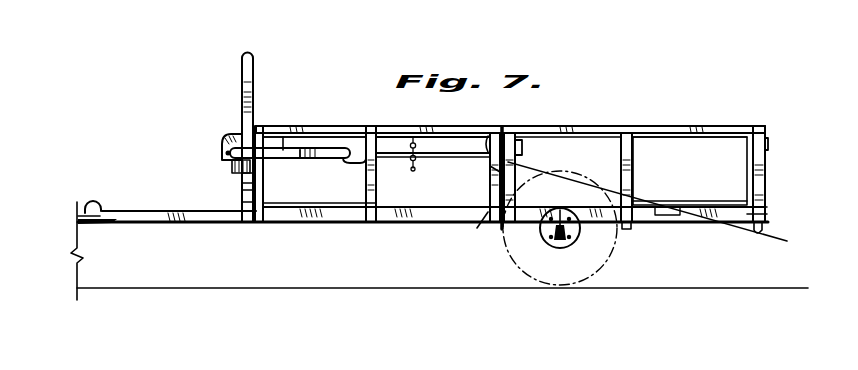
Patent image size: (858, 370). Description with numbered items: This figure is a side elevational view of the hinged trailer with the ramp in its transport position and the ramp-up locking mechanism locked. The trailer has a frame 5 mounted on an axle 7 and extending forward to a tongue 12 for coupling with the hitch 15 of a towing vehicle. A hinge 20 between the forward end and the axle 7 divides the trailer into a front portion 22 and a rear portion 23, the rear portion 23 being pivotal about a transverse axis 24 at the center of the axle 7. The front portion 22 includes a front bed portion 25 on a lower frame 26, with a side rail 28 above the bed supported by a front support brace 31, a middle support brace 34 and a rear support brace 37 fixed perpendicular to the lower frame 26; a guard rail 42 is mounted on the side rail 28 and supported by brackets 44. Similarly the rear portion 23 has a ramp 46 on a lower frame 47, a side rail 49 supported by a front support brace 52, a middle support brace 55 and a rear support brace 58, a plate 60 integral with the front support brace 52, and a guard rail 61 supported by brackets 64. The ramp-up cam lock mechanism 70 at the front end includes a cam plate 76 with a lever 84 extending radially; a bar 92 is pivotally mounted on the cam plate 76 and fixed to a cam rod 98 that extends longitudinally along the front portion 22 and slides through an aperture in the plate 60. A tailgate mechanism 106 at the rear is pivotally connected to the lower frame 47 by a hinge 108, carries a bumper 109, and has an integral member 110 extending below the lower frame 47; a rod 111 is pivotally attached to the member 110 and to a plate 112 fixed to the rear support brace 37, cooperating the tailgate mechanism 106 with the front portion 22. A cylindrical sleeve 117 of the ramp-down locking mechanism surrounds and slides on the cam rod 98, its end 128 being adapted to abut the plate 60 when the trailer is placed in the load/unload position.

The frame 5 is at (322, 218).
The axle 7 is at (570, 240).
The tongue 12 is at (168, 218).
The hitch 15 is at (85, 222).
The hinge 20 is at (503, 226).
The front portion 22 is at (372, 118).
The rear portion 23 is at (606, 106).
The transverse axis 24 is at (560, 241).
The front bed portion 25 is at (303, 208).
The lower frame 26 is at (270, 218).
The side rail 28 is at (279, 136).
The front support brace 31 is at (258, 223).
The middle support brace 34 is at (376, 222).
The rear support brace 37 is at (488, 212).
The guard rail 42 is at (400, 130).
The brackets 44 is at (247, 199).
The ramp 46 is at (692, 205).
The lower frame 47 is at (661, 218).
The side rail 49 is at (582, 137).
The front support brace 52 is at (510, 162).
The middle support brace 55 is at (623, 224).
The rear support brace 58 is at (748, 164).
The plate 60 is at (516, 150).
The guard rail 61 is at (662, 128).
The brackets 64 is at (633, 154).
The ramp-up cam lock mechanism 70 is at (211, 139).
The cam plate 76 is at (232, 165).
The lever 84 is at (244, 80).
The bar 92 is at (289, 149).
The cam rod 98 is at (343, 159).
The tailgate mechanism 106 is at (768, 185).
The hinge 108 is at (768, 212).
The bumper 109 is at (770, 144).
The member 110 is at (762, 228).
The rod 111 is at (566, 185).
The plate 112 is at (488, 172).
The cylindrical sleeve 117 is at (428, 152).
The end of sleeve 128 is at (483, 130).